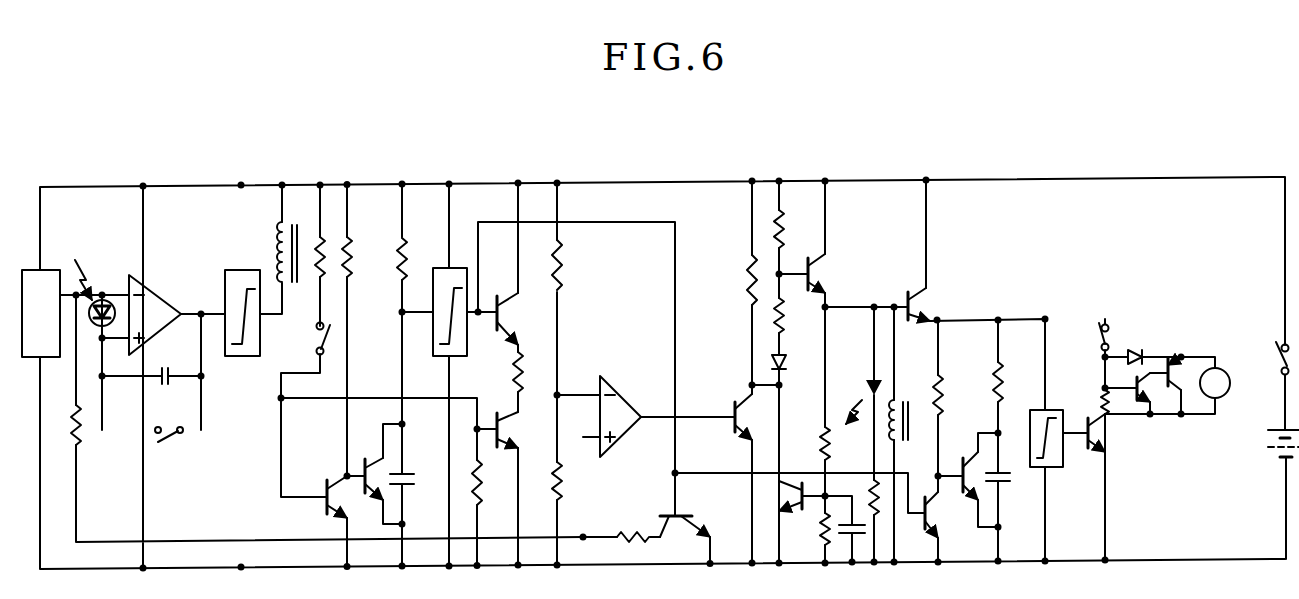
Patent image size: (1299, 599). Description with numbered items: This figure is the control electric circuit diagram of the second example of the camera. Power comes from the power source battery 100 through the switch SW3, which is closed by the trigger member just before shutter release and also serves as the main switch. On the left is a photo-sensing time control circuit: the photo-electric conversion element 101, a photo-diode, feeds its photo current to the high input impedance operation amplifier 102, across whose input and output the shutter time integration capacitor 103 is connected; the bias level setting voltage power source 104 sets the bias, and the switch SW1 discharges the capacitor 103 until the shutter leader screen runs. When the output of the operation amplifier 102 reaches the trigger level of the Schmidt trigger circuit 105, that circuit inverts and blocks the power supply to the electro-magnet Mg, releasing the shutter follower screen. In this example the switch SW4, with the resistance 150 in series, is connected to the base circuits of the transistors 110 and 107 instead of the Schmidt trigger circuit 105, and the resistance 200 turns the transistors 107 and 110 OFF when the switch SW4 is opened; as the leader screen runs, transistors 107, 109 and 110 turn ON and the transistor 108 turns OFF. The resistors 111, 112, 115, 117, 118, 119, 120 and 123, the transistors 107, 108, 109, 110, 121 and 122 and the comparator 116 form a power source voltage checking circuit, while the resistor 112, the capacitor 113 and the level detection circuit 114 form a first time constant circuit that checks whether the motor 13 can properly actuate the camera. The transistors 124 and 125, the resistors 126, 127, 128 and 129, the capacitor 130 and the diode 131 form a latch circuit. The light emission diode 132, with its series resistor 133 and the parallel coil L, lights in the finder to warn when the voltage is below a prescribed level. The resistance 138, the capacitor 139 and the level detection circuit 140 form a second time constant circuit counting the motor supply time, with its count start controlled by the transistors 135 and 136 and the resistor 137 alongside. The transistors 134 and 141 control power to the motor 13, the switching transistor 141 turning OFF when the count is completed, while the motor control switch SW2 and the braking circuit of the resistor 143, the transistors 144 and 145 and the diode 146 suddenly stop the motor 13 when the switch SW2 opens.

The power source battery 100 is at (1273, 441).
The photo-electric conversion element 101 is at (107, 300).
The operation amplifier 102 is at (160, 294).
The capacitor 103 is at (168, 384).
The bias level setting voltage power source 104 is at (55, 270).
The Schmidt trigger circuit 105 is at (230, 357).
The transistor 107 is at (327, 500).
The transistor 108 is at (368, 494).
The transistor 109 is at (497, 327).
The transistor 110 is at (500, 444).
The resistor 111 is at (352, 268).
The resistor 112 is at (398, 262).
The capacitor 113 is at (410, 478).
The level detection circuit 114 is at (432, 356).
The resistor 115 is at (522, 372).
The comparator 116 is at (620, 400).
The resistor 117 is at (562, 276).
The resistor 118 is at (555, 490).
The resistor 119 is at (72, 440).
The resistor 120 is at (632, 532).
The transistor 121 is at (684, 514).
The transistor 122 is at (733, 428).
The resistor 123 is at (746, 280).
The transistor 124 is at (814, 272).
The transistor 125 is at (798, 496).
The resistor 126 is at (783, 235).
The resistor 127 is at (783, 312).
The resistor 128 is at (830, 440).
The resistor 129 is at (822, 528).
The capacitor 130 is at (852, 545).
The diode 131 is at (786, 365).
The light emission diode 132 is at (868, 384).
The resistor 133 is at (880, 510).
The transistor 134 is at (914, 306).
The transistor 135 is at (926, 520).
The transistor 136 is at (962, 495).
The resistor 137 is at (943, 400).
The resistance 138 is at (1003, 388).
The capacitor 139 is at (1003, 482).
The level detection circuit 140 is at (1061, 468).
The switching transistor 141 is at (1092, 448).
The resistor 143 is at (1100, 392).
The transistor 144 is at (1140, 402).
The transistor 145 is at (1172, 392).
The diode 146 is at (1138, 350).
The resistance 150 is at (327, 252).
The resistance 200 is at (486, 494).
The motor 13 is at (1228, 371).
The coil L is at (902, 400).
The electro-magnet Mg is at (284, 230).
The switch SW1 is at (178, 442).
The switch SW2 is at (1110, 324).
The switch SW3 is at (1274, 346).
The switch SW4 is at (328, 338).